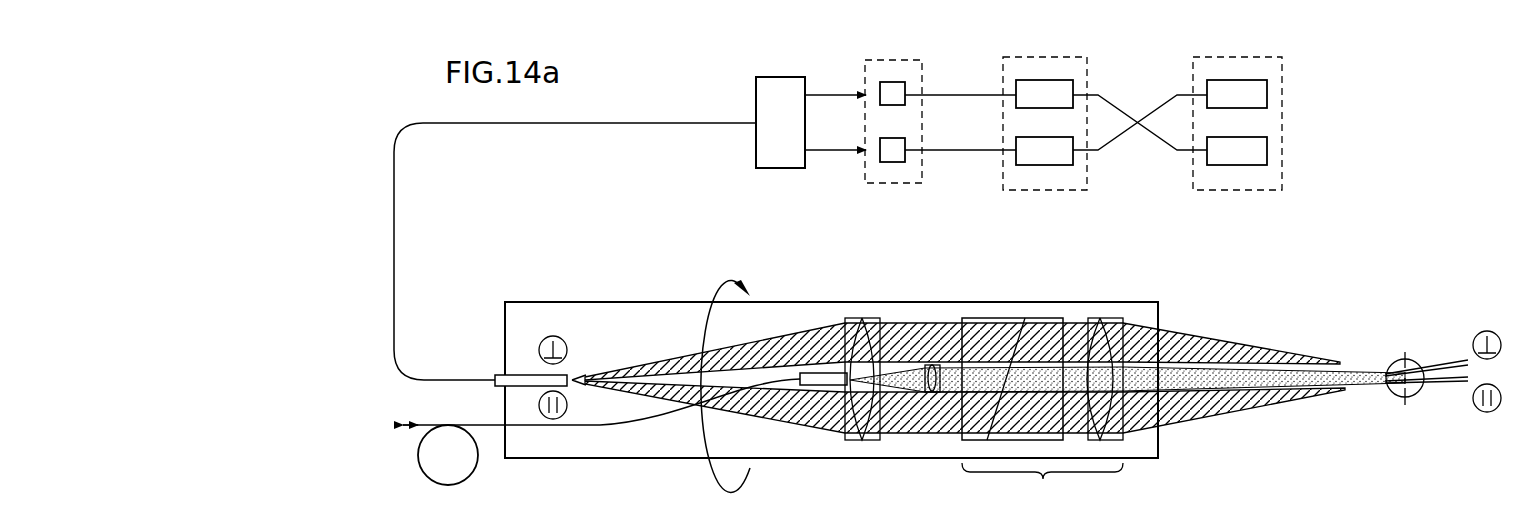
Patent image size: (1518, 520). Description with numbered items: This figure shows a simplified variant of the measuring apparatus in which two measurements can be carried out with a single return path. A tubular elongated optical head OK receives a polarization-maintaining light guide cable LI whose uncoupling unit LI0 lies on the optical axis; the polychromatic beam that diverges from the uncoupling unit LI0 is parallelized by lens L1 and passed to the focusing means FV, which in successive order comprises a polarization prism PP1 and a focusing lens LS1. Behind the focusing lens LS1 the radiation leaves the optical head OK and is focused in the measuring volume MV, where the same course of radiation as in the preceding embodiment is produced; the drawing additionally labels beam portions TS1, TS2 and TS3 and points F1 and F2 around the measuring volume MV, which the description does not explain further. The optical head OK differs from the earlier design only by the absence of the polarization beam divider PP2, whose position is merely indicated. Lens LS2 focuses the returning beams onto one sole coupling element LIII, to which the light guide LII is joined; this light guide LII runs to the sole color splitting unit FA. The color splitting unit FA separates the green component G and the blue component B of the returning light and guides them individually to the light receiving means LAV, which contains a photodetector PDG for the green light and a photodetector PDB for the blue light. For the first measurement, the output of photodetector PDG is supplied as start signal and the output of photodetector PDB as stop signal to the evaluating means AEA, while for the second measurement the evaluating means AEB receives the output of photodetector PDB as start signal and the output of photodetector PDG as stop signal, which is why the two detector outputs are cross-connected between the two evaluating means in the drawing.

The color splitting unit FA is at (780, 122).
The green component G is at (835, 83).
The blue component B is at (835, 138).
The light receiving means LAV is at (895, 62).
The photodetector for the green light beam PDG is at (900, 90).
The photodetector for the blue light beam PDB is at (900, 146).
The evaluating means for measurement A AEA is at (1047, 57).
The evaluating means for measurement B AEB is at (1243, 57).
The light guide LII is at (394, 227).
The coupling element LIII is at (513, 386).
The light guide cable LI is at (626, 428).
The uncoupling unit LI0 is at (812, 386).
The lens LS2 is at (868, 320).
The lens L1 is at (937, 367).
The optical head OK is at (967, 318).
The polarization prism PP1 is at (1038, 320).
The focusing lens LS1 is at (1100, 320).
The polarization beam divider PP2 is at (916, 514).
The focusing means FV is at (1042, 486).
The partial beam 1 TS1 is at (1297, 364).
The partial beam 2 TS2 is at (1308, 394).
The partial beam 3 TS3 is at (1343, 396).
The focus 1 F1 is at (1412, 396).
The focus 2 F2 is at (1400, 360).
The measuring volume MV is at (1413, 360).